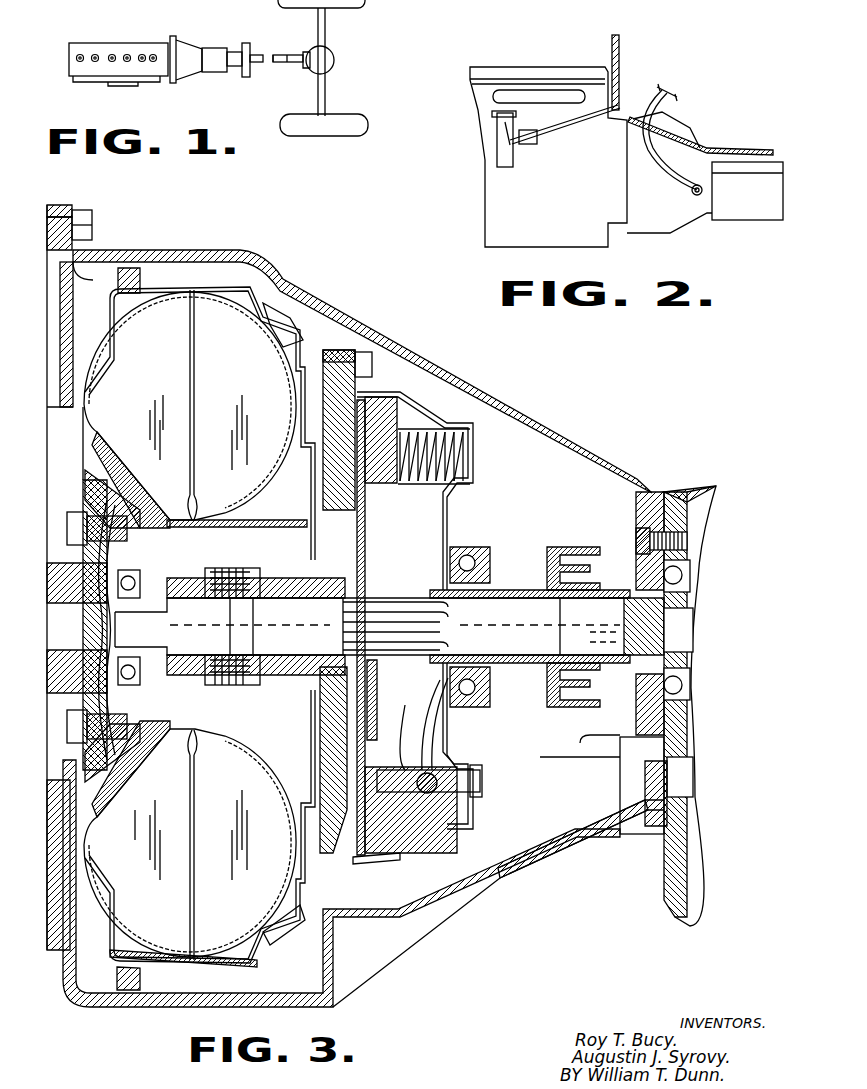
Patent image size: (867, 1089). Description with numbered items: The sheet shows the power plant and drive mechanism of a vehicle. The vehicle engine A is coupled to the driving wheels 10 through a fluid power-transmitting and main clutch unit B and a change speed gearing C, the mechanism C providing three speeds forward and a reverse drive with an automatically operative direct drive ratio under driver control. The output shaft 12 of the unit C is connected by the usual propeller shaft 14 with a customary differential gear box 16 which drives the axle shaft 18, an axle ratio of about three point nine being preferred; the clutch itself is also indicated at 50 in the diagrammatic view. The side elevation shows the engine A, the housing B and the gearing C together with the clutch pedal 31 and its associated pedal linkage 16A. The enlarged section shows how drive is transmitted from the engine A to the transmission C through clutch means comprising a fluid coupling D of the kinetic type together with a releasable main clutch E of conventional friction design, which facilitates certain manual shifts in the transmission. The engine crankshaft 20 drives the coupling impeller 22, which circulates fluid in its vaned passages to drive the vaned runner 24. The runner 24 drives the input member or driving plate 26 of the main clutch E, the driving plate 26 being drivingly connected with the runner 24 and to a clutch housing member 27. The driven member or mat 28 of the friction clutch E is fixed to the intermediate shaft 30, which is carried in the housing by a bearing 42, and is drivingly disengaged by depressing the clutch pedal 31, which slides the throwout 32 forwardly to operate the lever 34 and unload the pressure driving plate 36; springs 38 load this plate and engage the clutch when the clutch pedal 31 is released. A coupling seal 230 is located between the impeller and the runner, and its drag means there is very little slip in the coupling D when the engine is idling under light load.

In FIG. 1, the vehicle engine A is at (90, 44).
In FIG. 2, the vehicle engine A is at (498, 199).
In FIG. 1, the fluid power-transmitting and main clutch unit B is at (192, 37).
In FIG. 2, the fluid power-transmitting and main clutch unit B is at (670, 196).
In FIG. 3, the fluid power-transmitting and main clutch unit B is at (515, 413).
In FIG. 1, the change speed gearing C is at (214, 48).
In FIG. 2, the change speed gearing C is at (760, 203).
In FIG. 3, the fluid coupling D is at (257, 282).
In FIG. 3, the main clutch E is at (420, 403).
In FIG. 1, the driving wheels 10 is at (355, 119).
In FIG. 1, the output shaft 12 is at (258, 54).
In FIG. 1, the propeller shaft 14 is at (285, 65).
In FIG. 1, the differential gear box 16 is at (333, 59).
In FIG. 2, the clutch pedal 16A is at (693, 118).
In FIG. 1, the axle shaft 18 is at (327, 25).
In FIG. 3, the engine crankshaft 20 is at (70, 652).
In FIG. 3, the coupling impeller 22 is at (140, 402).
In FIG. 3, the vaned runner 24 is at (244, 398).
In FIG. 3, the driving plate 26 is at (343, 345).
In FIG. 3, the clutch housing member 27 is at (476, 465).
In FIG. 3, the driven member 28 is at (376, 395).
In FIG. 3, the intermediate shaft 30 is at (522, 630).
In FIG. 2, the clutch pedal 31 is at (680, 92).
In FIG. 3, the throwout 32 is at (510, 575).
In FIG. 3, the lever 34 is at (425, 690).
In FIG. 3, the pressure driving plate 36 is at (420, 712).
In FIG. 3, the springs 38 is at (457, 497).
In FIG. 3, the bearing 42 is at (693, 668).
In FIG. 1, the clutch 50 is at (239, 74).
In FIG. 3, the coupling seal 230 is at (226, 566).